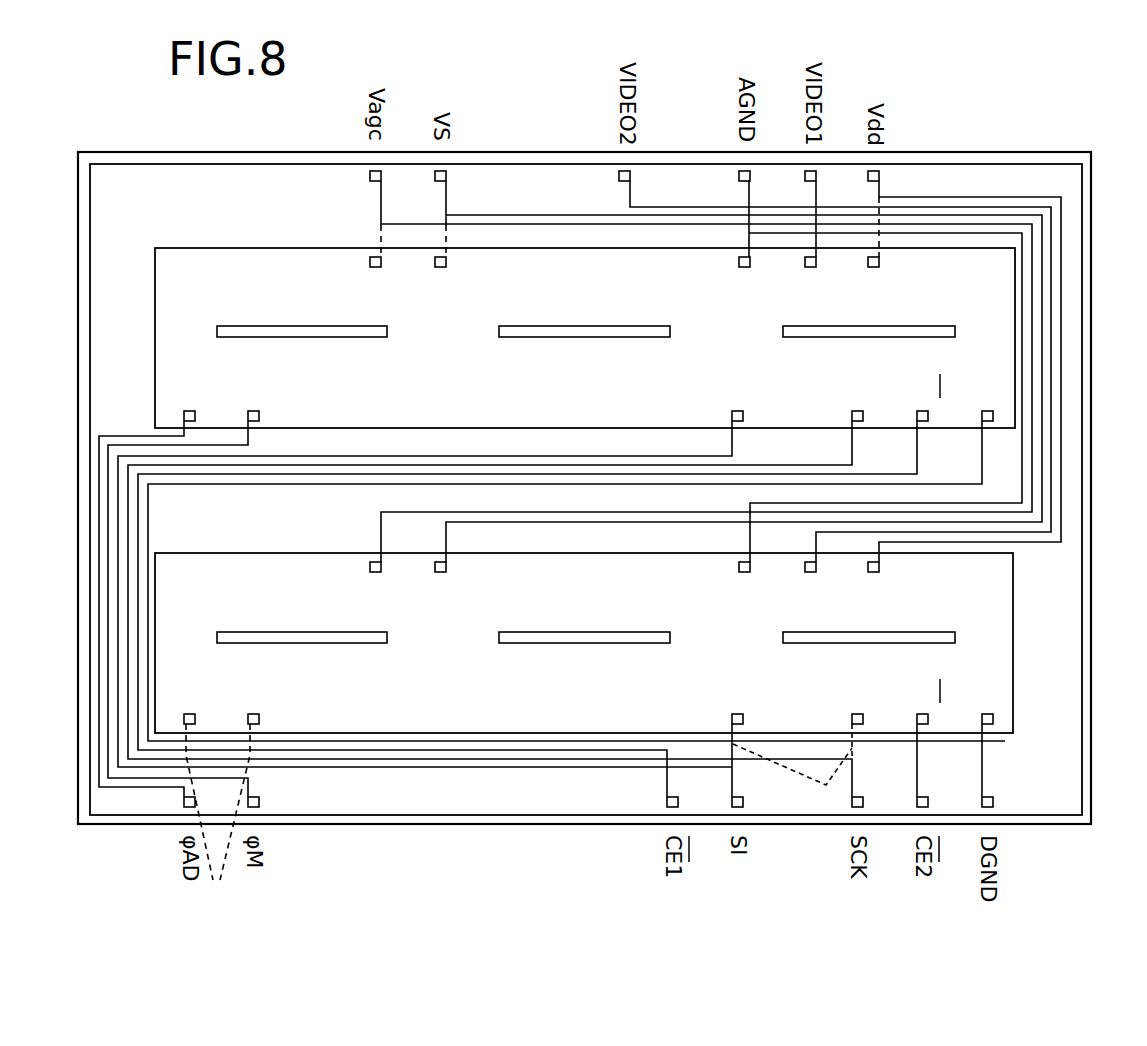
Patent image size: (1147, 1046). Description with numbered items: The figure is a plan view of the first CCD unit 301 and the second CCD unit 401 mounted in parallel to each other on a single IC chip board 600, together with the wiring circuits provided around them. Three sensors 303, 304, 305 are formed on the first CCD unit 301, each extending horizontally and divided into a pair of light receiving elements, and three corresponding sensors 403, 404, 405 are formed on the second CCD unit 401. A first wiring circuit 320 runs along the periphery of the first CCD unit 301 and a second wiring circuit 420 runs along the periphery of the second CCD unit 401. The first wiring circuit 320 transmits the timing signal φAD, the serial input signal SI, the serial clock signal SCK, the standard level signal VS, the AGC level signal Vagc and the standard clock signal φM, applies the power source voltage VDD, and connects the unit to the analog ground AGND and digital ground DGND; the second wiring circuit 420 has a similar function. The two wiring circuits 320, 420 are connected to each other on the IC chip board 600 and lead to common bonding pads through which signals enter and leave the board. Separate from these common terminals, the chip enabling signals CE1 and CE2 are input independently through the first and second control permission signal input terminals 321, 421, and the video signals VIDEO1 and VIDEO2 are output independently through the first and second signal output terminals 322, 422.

The IC chip board 600 is at (135, 176).
The first CCD unit 301 is at (205, 247).
The sensor 303 is at (297, 326).
The sensor 304 is at (565, 326).
The sensor 305 is at (933, 327).
The first wiring circuit 320 is at (440, 232).
The first signal output terminal 322 is at (818, 176).
The second signal output terminal 422 is at (632, 173).
The first control permission signal input terminal 321 is at (668, 808).
The second CCD unit 401 is at (1014, 626).
The sensor 403 is at (278, 632).
The sensor 404 is at (588, 632).
The sensor 405 is at (910, 632).
The second wiring circuit 420 is at (445, 522).
The second control permission signal input terminal 421 is at (919, 808).